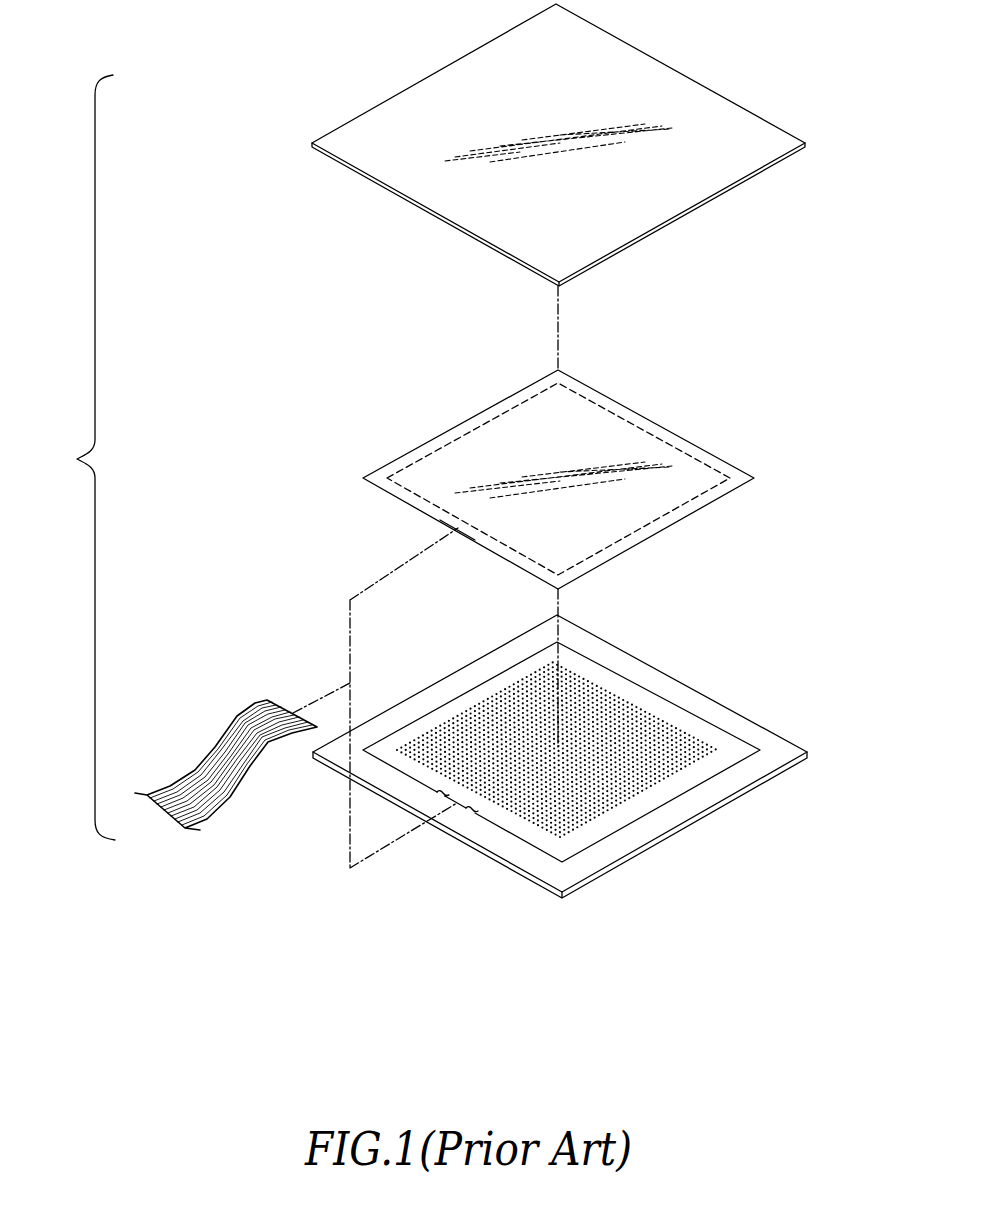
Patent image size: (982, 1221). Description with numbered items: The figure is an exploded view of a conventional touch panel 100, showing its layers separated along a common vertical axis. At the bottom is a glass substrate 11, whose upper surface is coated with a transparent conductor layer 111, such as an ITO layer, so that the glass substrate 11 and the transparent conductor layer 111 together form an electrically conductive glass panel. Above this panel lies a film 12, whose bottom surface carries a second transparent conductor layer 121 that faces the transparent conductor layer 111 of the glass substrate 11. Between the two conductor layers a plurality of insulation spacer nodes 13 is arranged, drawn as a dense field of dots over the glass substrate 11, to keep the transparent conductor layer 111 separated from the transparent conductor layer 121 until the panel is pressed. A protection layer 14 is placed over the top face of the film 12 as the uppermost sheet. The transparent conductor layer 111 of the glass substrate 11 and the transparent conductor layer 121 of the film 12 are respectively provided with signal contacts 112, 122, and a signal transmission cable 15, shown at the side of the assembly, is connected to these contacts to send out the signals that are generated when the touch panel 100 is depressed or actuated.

The touch panel 100 is at (69, 457).
The protection layer 14 is at (778, 137).
The film 12 is at (627, 549).
The transparent conductor layer 121 is at (693, 512).
The signal contact 122 is at (458, 532).
The glass substrate 11 is at (587, 868).
The transparent conductor layer 111 is at (673, 793).
The signal contact 112 is at (480, 817).
The insulation spacer nodes 13 is at (628, 803).
The signal transmission cable 15 is at (230, 802).